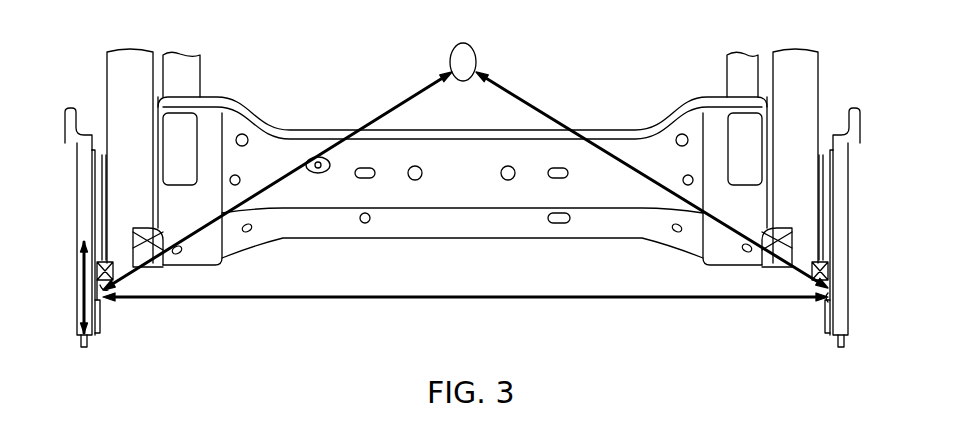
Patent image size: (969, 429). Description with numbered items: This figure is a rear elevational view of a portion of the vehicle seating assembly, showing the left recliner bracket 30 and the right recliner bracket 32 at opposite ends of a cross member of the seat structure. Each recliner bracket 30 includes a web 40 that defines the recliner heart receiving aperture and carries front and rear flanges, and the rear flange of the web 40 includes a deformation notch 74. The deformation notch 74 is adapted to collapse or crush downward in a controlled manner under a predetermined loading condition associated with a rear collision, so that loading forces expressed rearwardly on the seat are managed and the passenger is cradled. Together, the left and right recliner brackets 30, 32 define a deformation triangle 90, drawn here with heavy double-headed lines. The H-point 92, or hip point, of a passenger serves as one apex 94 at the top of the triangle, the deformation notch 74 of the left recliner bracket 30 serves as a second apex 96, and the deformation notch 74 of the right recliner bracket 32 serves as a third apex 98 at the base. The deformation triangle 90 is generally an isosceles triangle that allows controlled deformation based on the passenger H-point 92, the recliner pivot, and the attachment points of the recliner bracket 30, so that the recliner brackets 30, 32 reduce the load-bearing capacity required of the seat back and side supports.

The recliner bracket 30 is at (90, 162).
The right recliner bracket 32 is at (840, 182).
The web 40 is at (77, 190).
The deformation notch 74 is at (95, 292).
The deformation triangle 90 is at (196, 322).
The H-point 92 is at (470, 52).
The apex 94 is at (457, 67).
The second apex 96 is at (110, 289).
The third apex 98 is at (825, 303).